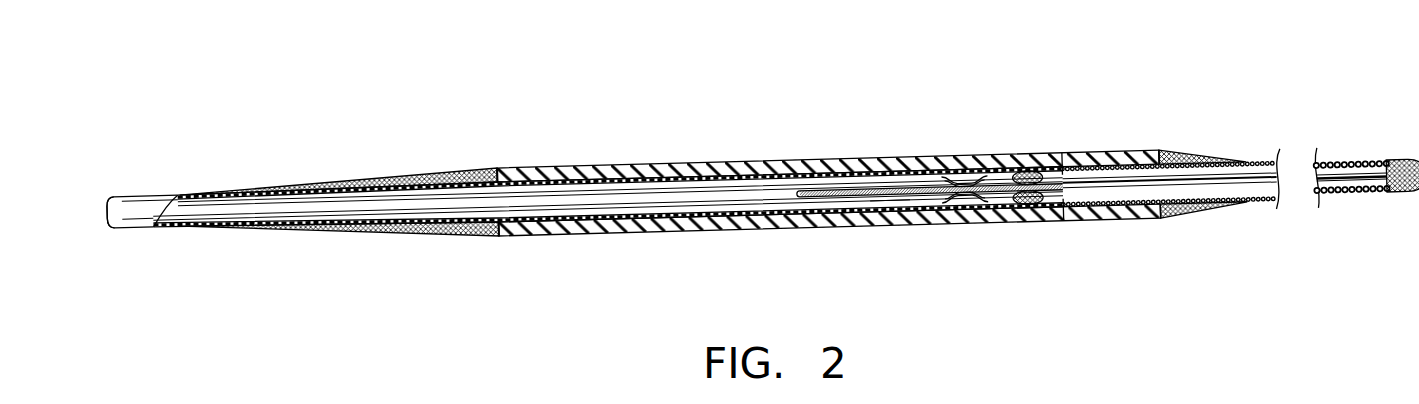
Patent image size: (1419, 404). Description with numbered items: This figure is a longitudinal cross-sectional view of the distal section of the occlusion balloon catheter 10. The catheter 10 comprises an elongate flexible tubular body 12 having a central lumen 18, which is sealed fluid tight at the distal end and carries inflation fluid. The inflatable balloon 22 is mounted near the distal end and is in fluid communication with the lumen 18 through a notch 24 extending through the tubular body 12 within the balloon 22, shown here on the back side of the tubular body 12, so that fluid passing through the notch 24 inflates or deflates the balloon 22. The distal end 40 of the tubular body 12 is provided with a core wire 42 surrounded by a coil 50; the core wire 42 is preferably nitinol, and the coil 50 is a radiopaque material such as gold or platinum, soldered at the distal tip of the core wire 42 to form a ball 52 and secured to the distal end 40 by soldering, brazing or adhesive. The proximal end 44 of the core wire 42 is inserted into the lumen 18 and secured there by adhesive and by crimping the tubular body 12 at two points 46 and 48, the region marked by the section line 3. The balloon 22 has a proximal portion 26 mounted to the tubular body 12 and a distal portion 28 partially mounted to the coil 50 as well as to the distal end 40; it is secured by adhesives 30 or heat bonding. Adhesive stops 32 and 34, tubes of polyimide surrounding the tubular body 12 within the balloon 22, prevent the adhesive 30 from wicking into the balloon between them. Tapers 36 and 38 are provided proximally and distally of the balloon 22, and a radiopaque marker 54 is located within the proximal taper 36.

The occlusion balloon catheter 10 is at (271, 80).
The tubular body 12 is at (130, 198).
The central lumen 18 is at (112, 184).
The inflatable balloon 22 is at (667, 163).
The notch 24 is at (803, 196).
The proximal portion 26 is at (510, 156).
The distal portion 28 is at (1164, 128).
The adhesives 30 is at (584, 180).
The adhesive stop 32 is at (696, 219).
The adhesive stop 34 is at (973, 212).
The taper 36 is at (455, 172).
The taper 38 is at (1195, 157).
The distal end 40 is at (1058, 150).
The core wire 42 is at (1118, 219).
The proximal end 44 is at (886, 214).
The crimp point 46 is at (957, 212).
The crimp point 48 is at (1030, 213).
The coil 50 is at (1257, 163).
The ball 52 is at (1418, 138).
The radiopaque marker 54 is at (392, 238).
The section line 3- 3 is at (1007, 132).